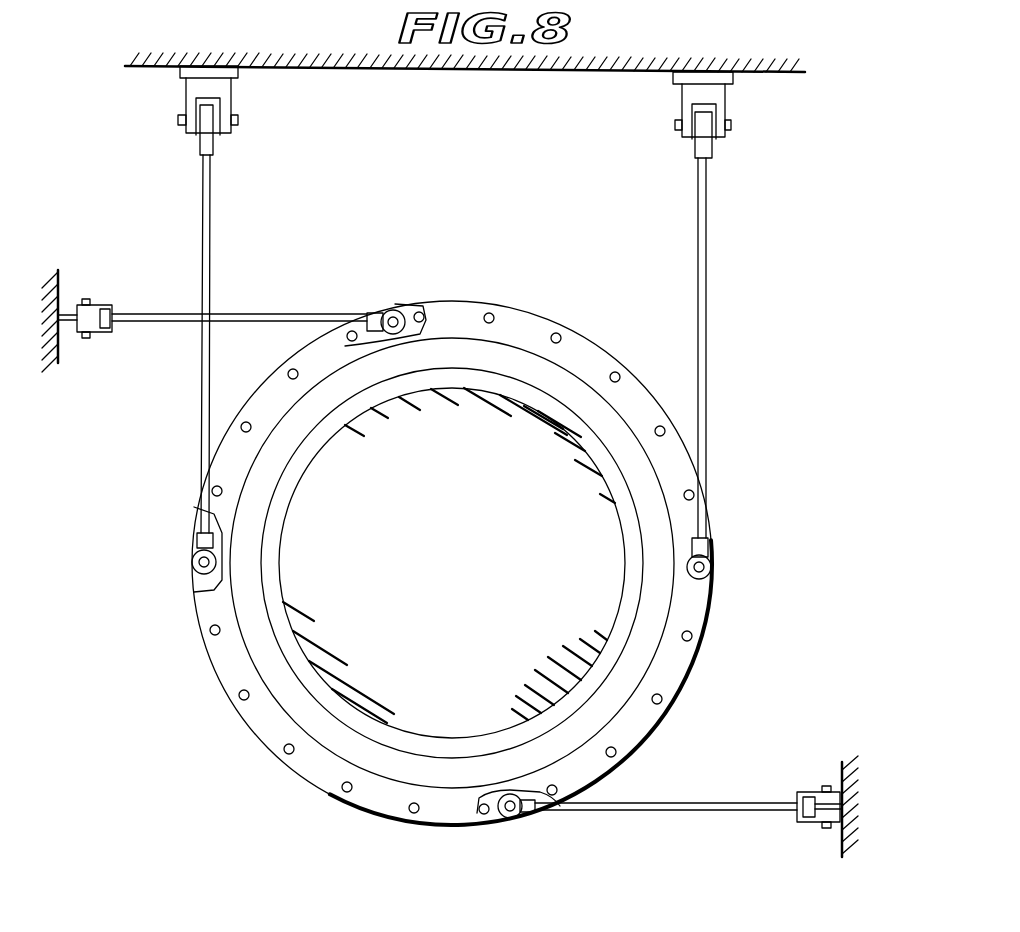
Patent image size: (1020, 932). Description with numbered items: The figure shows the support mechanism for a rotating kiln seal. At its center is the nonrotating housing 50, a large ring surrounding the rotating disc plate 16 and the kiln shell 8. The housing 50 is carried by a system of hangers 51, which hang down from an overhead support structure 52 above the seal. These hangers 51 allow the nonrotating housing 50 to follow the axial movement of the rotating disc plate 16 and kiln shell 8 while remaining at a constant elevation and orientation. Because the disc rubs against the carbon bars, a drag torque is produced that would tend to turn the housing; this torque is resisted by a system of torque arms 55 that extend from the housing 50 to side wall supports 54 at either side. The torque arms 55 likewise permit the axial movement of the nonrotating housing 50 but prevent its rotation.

The kiln shell 8 is at (281, 582).
The rotating disc plate 16 is at (263, 612).
The nonrotating housing 50 is at (385, 805).
The hangers 51 is at (212, 214).
The overhead support structure 52 is at (668, 71).
The side wall supports 54 is at (60, 293).
The torque arms 55 is at (256, 314).